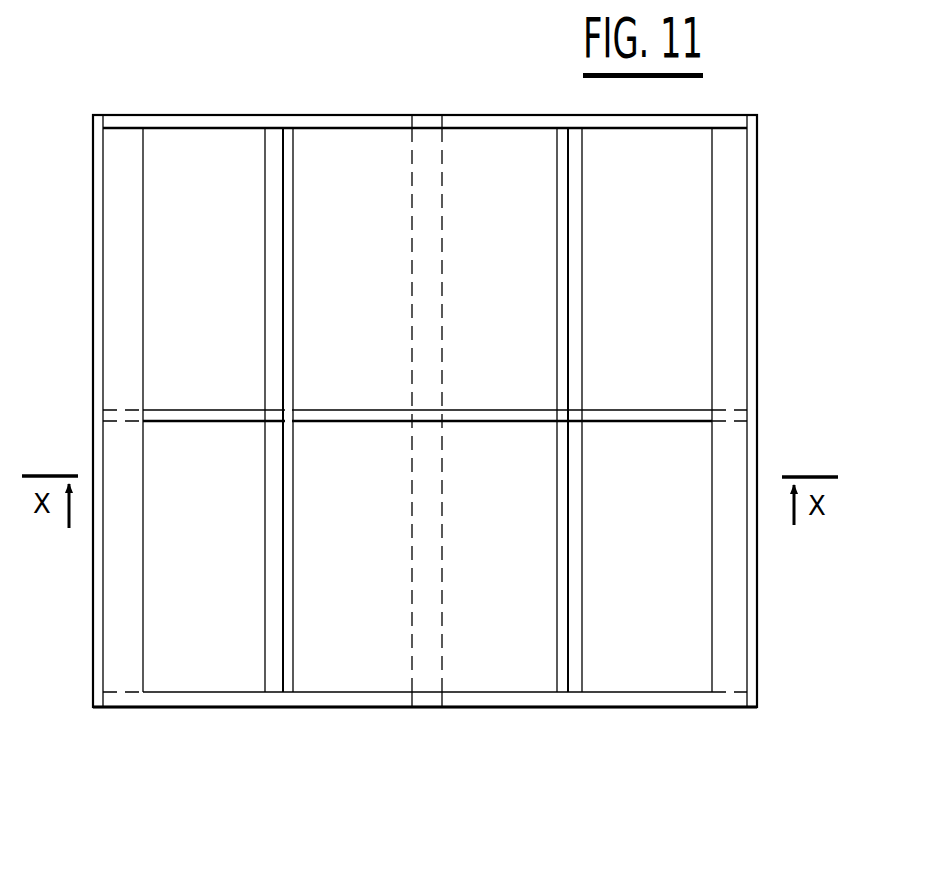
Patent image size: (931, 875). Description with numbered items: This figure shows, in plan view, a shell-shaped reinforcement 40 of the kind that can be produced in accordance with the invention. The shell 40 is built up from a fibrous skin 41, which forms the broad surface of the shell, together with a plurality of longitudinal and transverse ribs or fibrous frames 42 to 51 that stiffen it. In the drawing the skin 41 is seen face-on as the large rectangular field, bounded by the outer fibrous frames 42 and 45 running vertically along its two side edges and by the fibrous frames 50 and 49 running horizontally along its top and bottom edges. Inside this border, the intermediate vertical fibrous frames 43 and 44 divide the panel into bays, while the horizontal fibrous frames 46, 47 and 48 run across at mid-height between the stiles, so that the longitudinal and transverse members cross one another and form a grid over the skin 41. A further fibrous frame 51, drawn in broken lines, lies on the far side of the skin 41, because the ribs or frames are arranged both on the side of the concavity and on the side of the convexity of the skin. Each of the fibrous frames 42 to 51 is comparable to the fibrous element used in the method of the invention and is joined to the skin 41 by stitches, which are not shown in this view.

The shell-shaped reinforcement 40 is at (78, 298).
The fibrous skin 41 is at (187, 668).
The fibrous frame 42 is at (116, 610).
The fibrous frame 43 is at (290, 613).
The fibrous frame 44 is at (572, 596).
The fibrous frame 45 is at (735, 622).
The fibrous frame 46 is at (195, 415).
The fibrous frame 47 is at (357, 415).
The fibrous frame 48 is at (641, 415).
The fibrous frame 49 is at (333, 698).
The fibrous frame 50 is at (228, 122).
The fibrous frame 51 is at (412, 172).